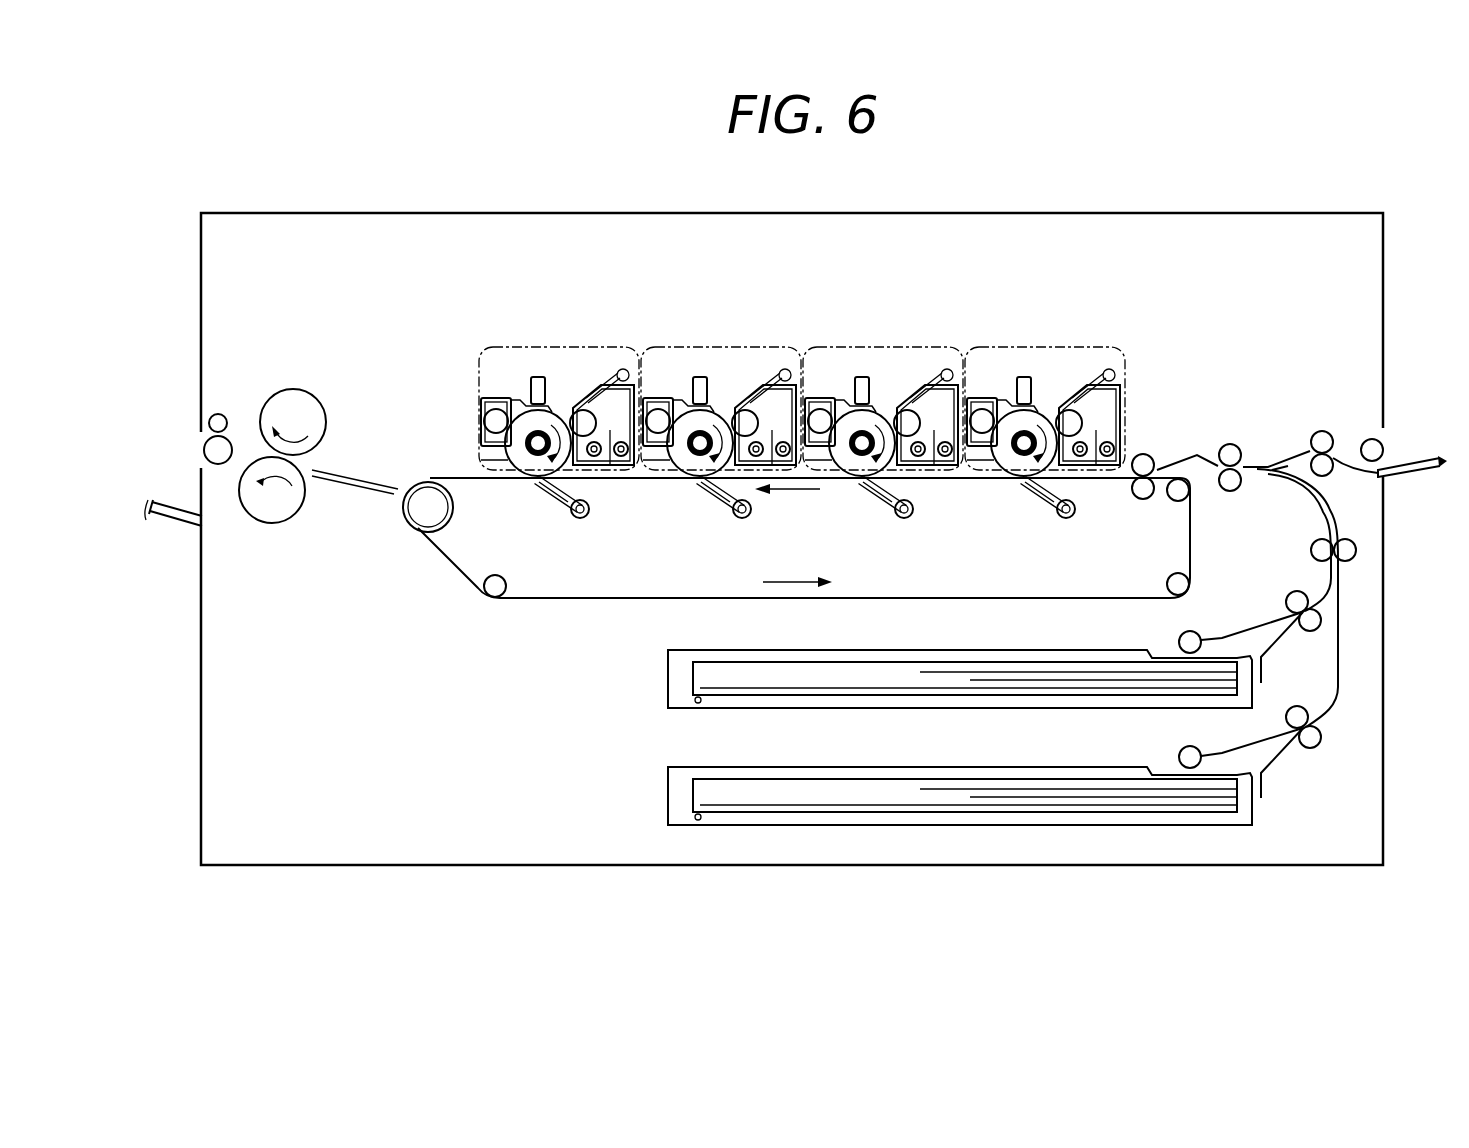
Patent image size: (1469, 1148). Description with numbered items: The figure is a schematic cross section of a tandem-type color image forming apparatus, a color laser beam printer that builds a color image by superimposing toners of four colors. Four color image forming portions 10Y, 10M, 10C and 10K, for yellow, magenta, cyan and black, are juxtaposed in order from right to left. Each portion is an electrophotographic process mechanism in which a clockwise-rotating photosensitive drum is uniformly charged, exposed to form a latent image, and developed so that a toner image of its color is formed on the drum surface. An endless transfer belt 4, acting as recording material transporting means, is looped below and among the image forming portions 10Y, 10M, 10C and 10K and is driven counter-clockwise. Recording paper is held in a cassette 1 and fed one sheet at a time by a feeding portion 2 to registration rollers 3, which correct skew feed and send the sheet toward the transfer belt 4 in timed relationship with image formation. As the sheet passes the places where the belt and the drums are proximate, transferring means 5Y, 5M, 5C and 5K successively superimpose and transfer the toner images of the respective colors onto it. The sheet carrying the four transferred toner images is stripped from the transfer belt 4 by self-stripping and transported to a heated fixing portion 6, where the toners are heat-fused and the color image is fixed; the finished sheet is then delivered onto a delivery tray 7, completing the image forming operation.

The cassette 1 is at (910, 827).
The feeding portion 2 is at (1355, 813).
The registration rollers 3 is at (1238, 442).
The transfer belt 4 is at (610, 600).
The transferring means 5K is at (560, 513).
The transferring means 5C is at (722, 513).
The transferring means 5M is at (884, 513).
The transferring means 5Y is at (1046, 513).
The fixing portion 6 is at (302, 372).
The delivery tray 7 is at (156, 530).
The color image forming portion 10K is at (485, 303).
The color image forming portion 10C is at (647, 303).
The color image forming portion 10M is at (809, 303).
The color image forming portion 10Y is at (971, 303).